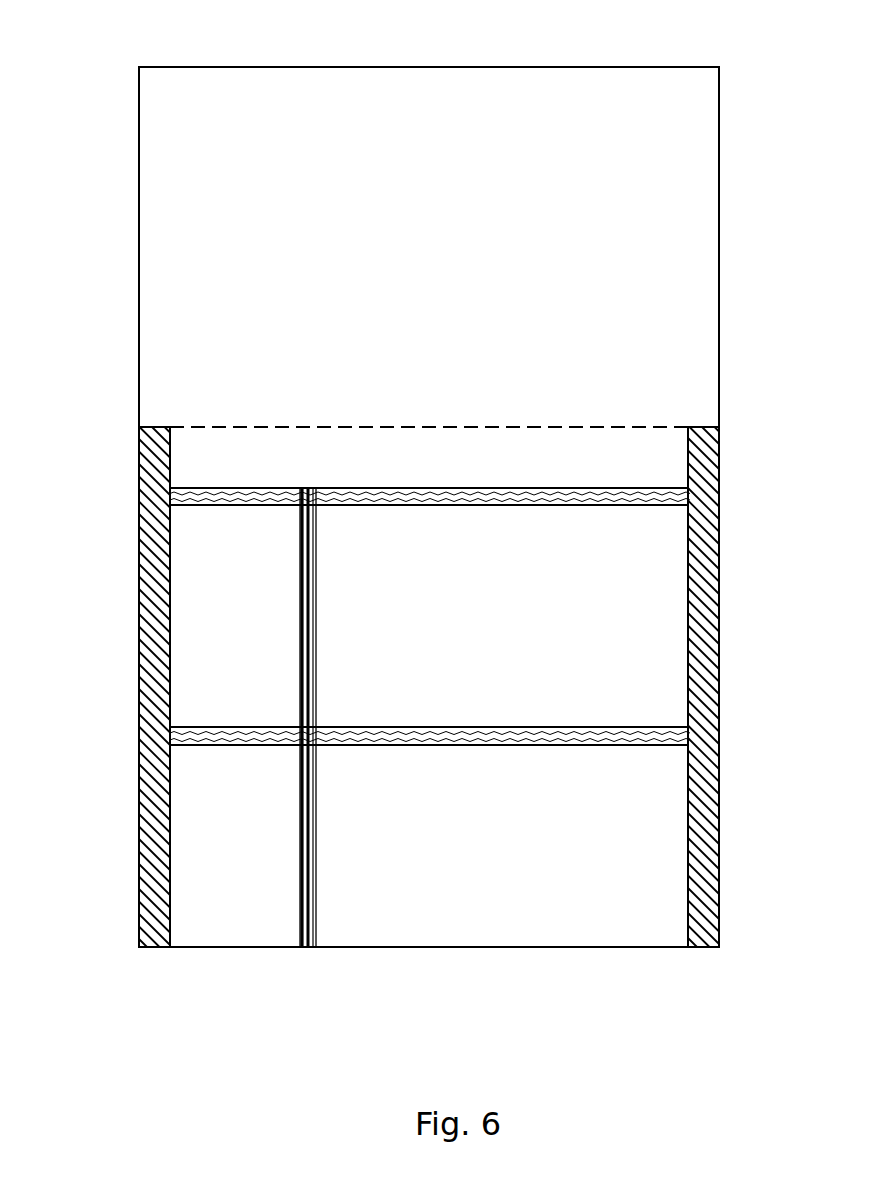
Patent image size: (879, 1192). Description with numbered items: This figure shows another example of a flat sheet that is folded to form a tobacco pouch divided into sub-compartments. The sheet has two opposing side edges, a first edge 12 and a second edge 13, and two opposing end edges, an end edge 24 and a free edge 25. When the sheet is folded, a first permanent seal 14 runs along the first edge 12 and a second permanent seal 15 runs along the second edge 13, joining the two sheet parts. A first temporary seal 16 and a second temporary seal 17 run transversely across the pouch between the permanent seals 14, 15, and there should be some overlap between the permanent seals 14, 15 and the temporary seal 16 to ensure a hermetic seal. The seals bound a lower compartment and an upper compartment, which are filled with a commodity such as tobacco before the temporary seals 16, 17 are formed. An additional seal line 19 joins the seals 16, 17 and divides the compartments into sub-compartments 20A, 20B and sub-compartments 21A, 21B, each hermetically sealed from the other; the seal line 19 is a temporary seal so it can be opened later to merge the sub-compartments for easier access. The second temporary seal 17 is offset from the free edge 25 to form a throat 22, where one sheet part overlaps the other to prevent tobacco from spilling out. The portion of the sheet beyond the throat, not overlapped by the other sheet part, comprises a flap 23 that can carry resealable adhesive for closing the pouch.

The first edge 12 is at (139, 663).
The second edge 13 is at (720, 620).
The first permanent seal 14 is at (138, 582).
The second permanent seal 15 is at (697, 562).
The first temporary seal 16 is at (138, 733).
The second temporary seal 17 is at (138, 497).
The additional seal line 19 is at (301, 915).
The sub-compartment 20A is at (502, 889).
The sub-compartment 20B is at (235, 889).
The sub-compartment 21A is at (502, 562).
The sub-compartment 21B is at (235, 562).
The throat 22 is at (210, 459).
The flap 23 is at (192, 240).
The end edge 24 is at (402, 67).
The free edge 25 is at (213, 427).